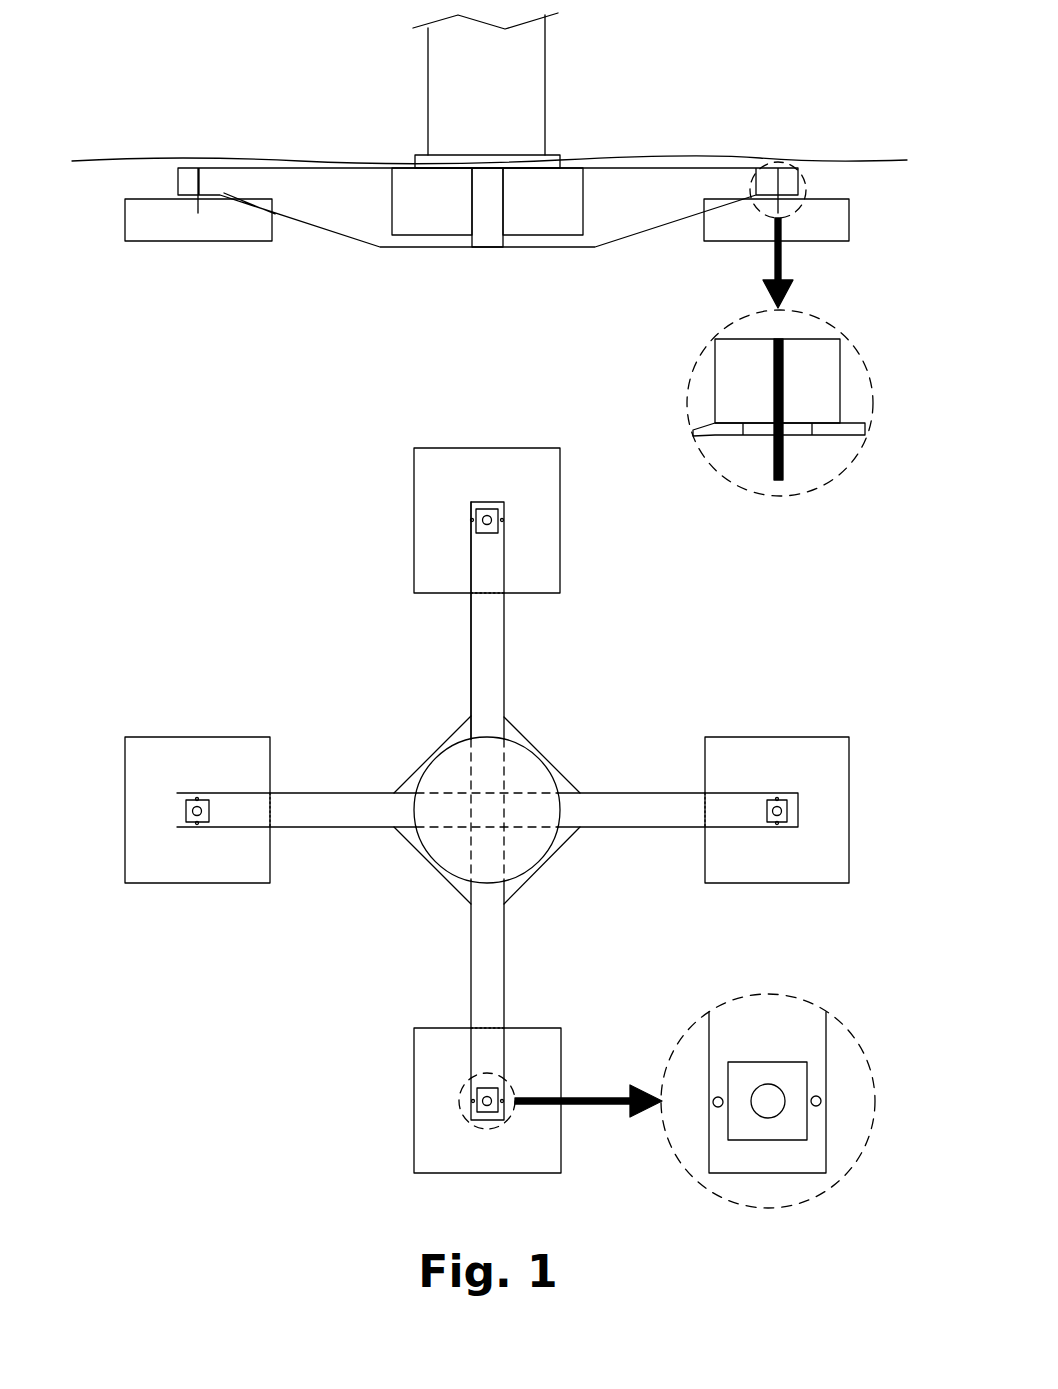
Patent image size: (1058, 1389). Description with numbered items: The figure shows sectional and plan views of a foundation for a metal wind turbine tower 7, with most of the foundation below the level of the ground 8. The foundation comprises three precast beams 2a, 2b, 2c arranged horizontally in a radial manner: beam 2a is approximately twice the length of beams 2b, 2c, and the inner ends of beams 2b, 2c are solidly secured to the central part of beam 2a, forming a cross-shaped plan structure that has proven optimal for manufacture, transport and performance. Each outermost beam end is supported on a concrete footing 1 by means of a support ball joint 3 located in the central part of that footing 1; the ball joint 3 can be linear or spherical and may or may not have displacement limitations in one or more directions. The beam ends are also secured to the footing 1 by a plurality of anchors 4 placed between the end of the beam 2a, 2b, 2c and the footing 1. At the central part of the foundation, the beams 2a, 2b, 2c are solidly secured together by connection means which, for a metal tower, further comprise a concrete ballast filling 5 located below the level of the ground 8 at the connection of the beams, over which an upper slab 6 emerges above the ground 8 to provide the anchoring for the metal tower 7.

The concrete footing 1 is at (155, 213).
The precast beam 2a is at (345, 215).
The precast beam 2b is at (487, 217).
The precast beam 2c is at (487, 641).
The support ball joint 3 is at (795, 427).
The anchors 4 is at (783, 460).
The concrete ballast filling 5 is at (533, 207).
The upper slab 6 is at (542, 162).
The metal tower 7 is at (513, 89).
The ground 8 is at (100, 180).